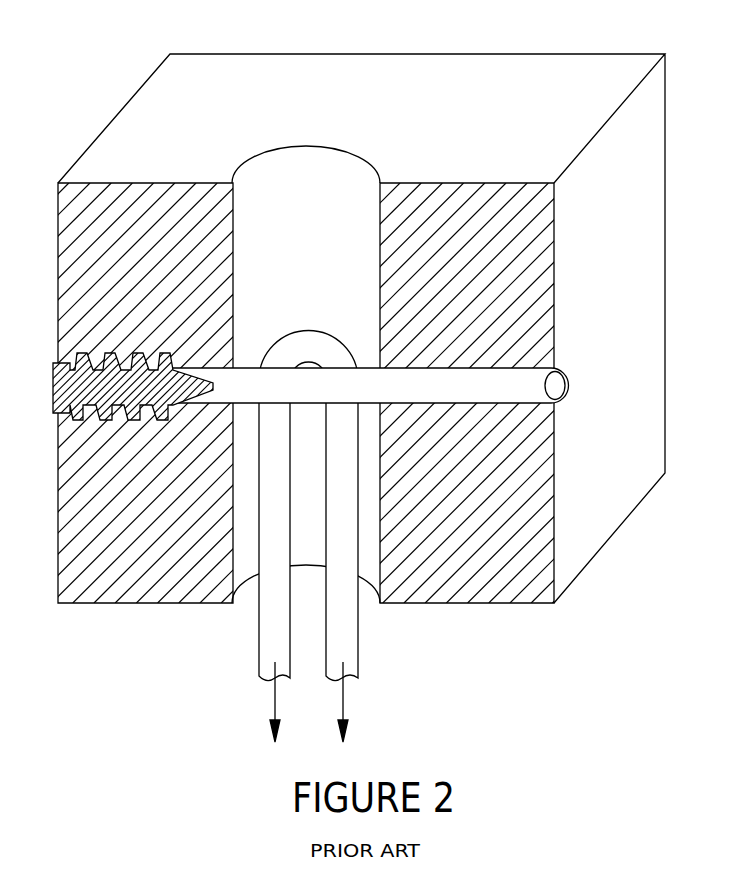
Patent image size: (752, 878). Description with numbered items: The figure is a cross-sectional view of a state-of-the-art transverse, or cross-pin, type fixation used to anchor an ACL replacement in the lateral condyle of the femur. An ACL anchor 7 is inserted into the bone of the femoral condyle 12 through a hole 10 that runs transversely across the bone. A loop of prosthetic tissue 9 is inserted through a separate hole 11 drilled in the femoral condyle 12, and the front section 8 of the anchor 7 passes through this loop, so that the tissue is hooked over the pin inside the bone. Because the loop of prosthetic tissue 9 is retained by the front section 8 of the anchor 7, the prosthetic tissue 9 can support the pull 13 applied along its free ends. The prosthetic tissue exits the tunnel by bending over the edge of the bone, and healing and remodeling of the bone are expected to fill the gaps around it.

The ACL anchor 7 is at (65, 392).
The front section 8 is at (442, 392).
The prosthetic tissue 9 is at (258, 620).
The hole 10 is at (567, 388).
The hole 11 is at (306, 168).
The femoral condyle 12 is at (102, 250).
The pull 13 is at (343, 690).